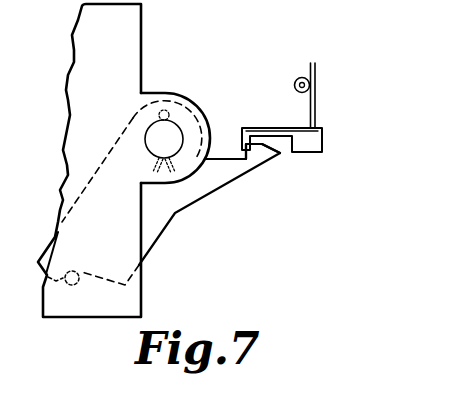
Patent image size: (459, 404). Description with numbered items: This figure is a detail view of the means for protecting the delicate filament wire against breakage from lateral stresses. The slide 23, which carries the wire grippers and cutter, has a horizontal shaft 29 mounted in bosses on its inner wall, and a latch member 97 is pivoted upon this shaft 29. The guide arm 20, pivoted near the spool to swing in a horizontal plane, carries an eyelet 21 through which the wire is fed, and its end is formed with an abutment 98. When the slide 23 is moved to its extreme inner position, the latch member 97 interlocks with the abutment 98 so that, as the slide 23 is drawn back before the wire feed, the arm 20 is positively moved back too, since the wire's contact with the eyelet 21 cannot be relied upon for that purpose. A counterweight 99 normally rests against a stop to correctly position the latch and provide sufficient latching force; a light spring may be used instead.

The guide arm 20 is at (316, 139).
The eyelets 21 is at (316, 75).
The slide 23 is at (132, 31).
The horizontal shaft 29 is at (167, 132).
The latch member 97 is at (241, 168).
The abutment 98 is at (245, 143).
The counterweight 99 is at (153, 228).